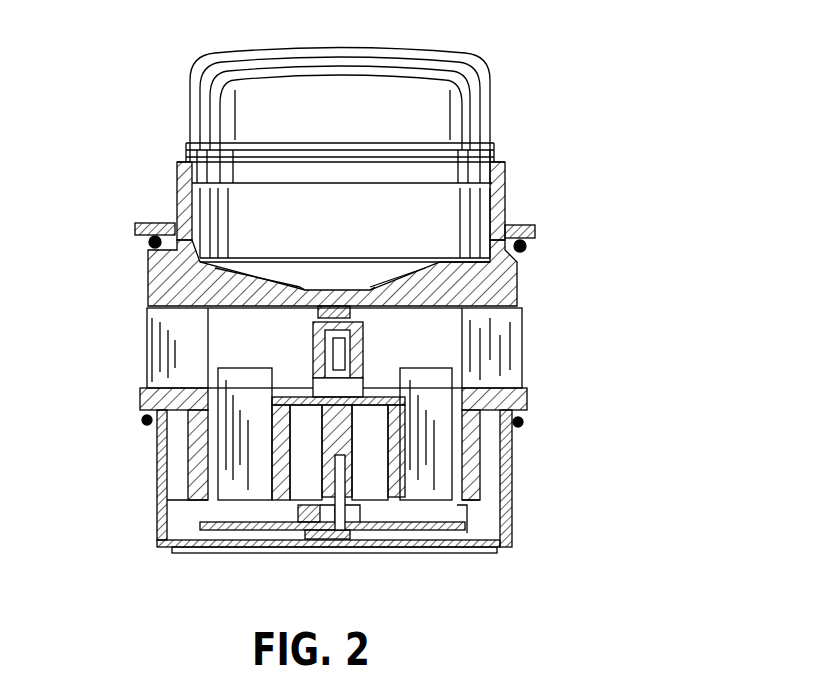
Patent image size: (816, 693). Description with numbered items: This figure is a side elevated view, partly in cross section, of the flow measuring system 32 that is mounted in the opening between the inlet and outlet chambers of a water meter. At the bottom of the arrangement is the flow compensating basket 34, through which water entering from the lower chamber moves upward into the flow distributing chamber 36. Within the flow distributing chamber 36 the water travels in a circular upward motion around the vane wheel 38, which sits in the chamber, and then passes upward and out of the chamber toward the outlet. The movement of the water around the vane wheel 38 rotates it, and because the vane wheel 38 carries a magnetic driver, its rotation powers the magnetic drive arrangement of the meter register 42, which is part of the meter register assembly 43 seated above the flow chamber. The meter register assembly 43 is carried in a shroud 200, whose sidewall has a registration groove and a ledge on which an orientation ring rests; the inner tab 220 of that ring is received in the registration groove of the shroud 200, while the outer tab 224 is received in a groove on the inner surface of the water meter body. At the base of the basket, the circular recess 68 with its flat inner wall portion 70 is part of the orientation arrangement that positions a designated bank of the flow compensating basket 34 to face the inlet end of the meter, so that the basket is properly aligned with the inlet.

The meter register 42 is at (497, 108).
The meter register assembly 43 is at (512, 186).
The outer tab 224 is at (152, 225).
The inner tab 220 is at (547, 224).
The shroud 200 is at (536, 266).
The flow distributing chamber 36 is at (530, 356).
The vane wheel 38 is at (239, 362).
The flow measuring system 32 is at (144, 436).
The flow compensating basket 34 is at (525, 460).
The circular recess 68 is at (300, 508).
The flat inner wall portion 70 is at (345, 510).